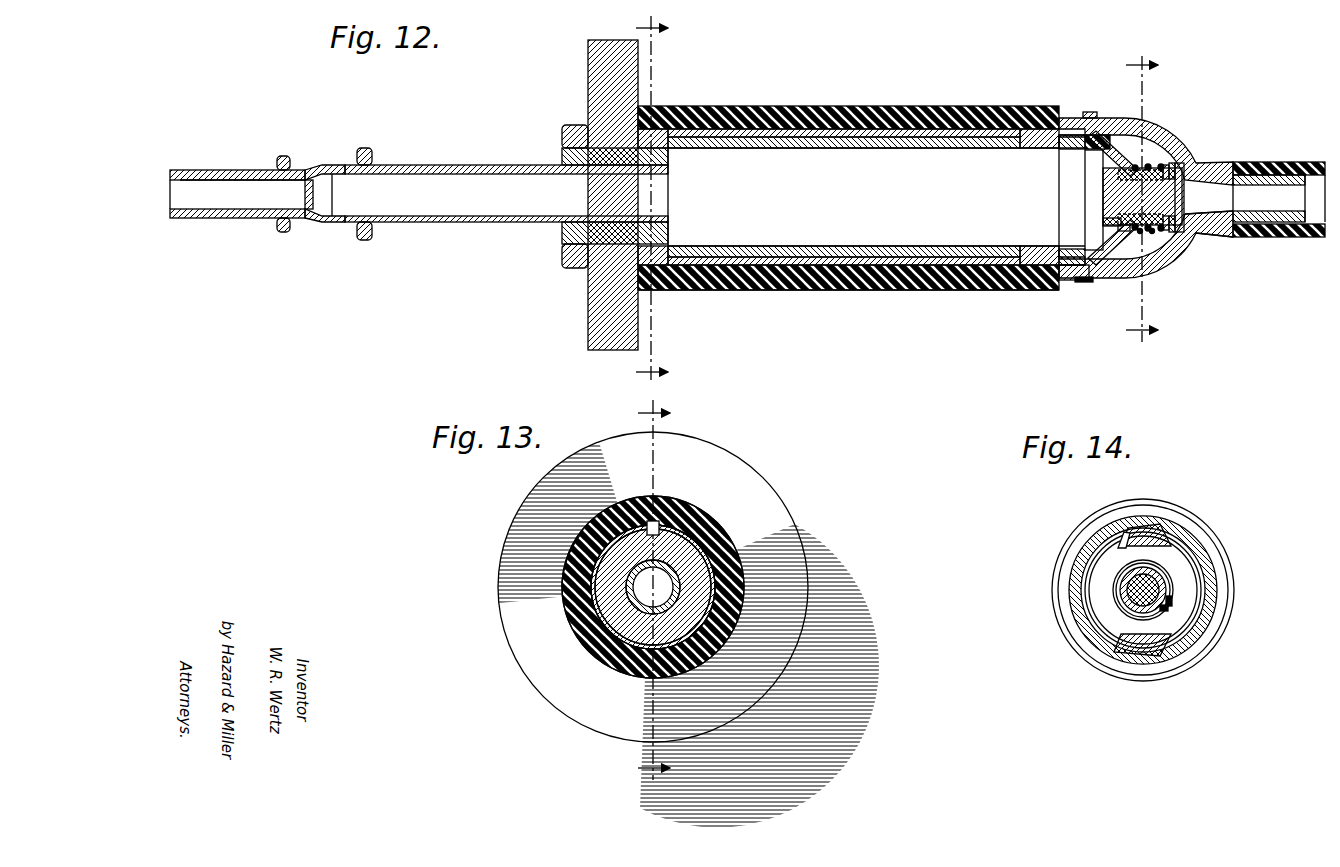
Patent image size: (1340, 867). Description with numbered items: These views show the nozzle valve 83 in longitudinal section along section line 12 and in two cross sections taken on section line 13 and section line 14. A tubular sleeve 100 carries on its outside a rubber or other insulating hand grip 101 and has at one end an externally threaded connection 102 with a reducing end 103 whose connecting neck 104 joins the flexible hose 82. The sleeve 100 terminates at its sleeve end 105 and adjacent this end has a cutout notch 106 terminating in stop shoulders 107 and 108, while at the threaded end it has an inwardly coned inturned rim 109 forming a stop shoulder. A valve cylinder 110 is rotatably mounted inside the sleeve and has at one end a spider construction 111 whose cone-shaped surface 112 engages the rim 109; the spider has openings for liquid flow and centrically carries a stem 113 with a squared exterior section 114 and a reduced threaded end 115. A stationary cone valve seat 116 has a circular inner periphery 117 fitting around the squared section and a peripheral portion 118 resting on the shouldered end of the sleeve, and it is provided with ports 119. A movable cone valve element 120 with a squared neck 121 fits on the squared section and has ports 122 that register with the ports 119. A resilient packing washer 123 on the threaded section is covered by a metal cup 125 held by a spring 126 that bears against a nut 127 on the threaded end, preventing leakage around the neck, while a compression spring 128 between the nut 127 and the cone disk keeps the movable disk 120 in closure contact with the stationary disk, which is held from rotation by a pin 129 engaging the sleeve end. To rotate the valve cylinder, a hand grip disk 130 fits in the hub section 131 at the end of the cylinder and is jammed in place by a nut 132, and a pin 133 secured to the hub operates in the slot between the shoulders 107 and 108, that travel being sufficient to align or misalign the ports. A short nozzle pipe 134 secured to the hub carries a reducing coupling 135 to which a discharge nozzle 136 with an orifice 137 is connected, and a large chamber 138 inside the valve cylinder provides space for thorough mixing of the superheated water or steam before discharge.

In FIG. 13, the section line 12- 12 is at (663, 595).
In FIG. 12, the section line 13- 13 is at (663, 194).
In FIG. 12, the section line 14- 14 is at (1150, 198).
In FIG. 12, the flexible hose 82 is at (1300, 162).
In FIG. 12, the nozzle valve 83 is at (834, 104).
In FIG. 12, the tubular sleeve 100 is at (1020, 265).
In FIG. 13, the tubular sleeve 100 is at (748, 577).
In FIG. 12, the insulating hand grip 101 is at (930, 290).
In FIG. 13, the insulating hand grip 101 is at (740, 550).
In FIG. 12, the externally threaded connection 102 is at (1070, 280).
In FIG. 12, the reducing end 103 is at (1205, 172).
In FIG. 14, the reducing end 103 is at (1190, 542).
In FIG. 12, the connecting neck 104 is at (1265, 162).
In FIG. 12, the sleeve end 105 is at (655, 290).
In FIG. 13, the cutout notch 106 is at (690, 540).
In FIG. 13, the stop shoulder 107 is at (712, 552).
In FIG. 13, the stop shoulder 108 is at (565, 568).
In FIG. 12, the inturned rim 109 is at (1085, 150).
In FIG. 12, the valve cylinder 110 is at (887, 148).
In FIG. 12, the spider construction 111 is at (1094, 195).
In FIG. 12, the cone-shaped surface 112 is at (1108, 222).
In FIG. 12, the stem 113 is at (1150, 167).
In FIG. 14, the stem 113 is at (1132, 592).
In FIG. 12, the squared exterior section 114 is at (1142, 233).
In FIG. 14, the squared exterior section 114 is at (1166, 608).
In FIG. 12, the reduced threaded end 115 is at (1183, 197).
In FIG. 12, the stationary cone valve seat 116 is at (1106, 140).
In FIG. 12, the circular inner periphery 117 is at (1124, 231).
In FIG. 12, the peripheral portion 118 is at (1084, 282).
In FIG. 12, the ports 119 is at (1112, 160).
In FIG. 14, the ports 119 is at (1138, 560).
In FIG. 12, the movable cone valve element 120 is at (1138, 172).
In FIG. 14, the movable cone valve element 120 is at (1180, 562).
In FIG. 12, the squared neck 121 is at (1155, 232).
In FIG. 14, the squared neck 121 is at (1160, 578).
In FIG. 12, the ports 122 is at (1112, 236).
In FIG. 14, the ports 122 is at (1125, 548).
In FIG. 12, the resilient packing washer 123 is at (1180, 238).
In FIG. 12, the metal cup 125 is at (1166, 166).
In FIG. 14, the metal cup 125 is at (1165, 590).
In FIG. 12, the spring 126 is at (1200, 236).
In FIG. 12, the nut 127 is at (1183, 170).
In FIG. 12, the compression spring 128 is at (1173, 167).
In FIG. 14, the compression spring 128 is at (1170, 598).
In FIG. 12, the pin 129 is at (1090, 118).
In FIG. 12, the hand grip disk 130 is at (612, 80).
In FIG. 13, the hand grip disk 130 is at (755, 670).
In FIG. 12, the hub section 131 is at (560, 258).
In FIG. 13, the hub section 131 is at (684, 602).
In FIG. 12, the nut 132 is at (566, 131).
In FIG. 12, the pin 133 is at (668, 122).
In FIG. 13, the pin 133 is at (657, 520).
In FIG. 12, the nozzle pipe 134 is at (440, 222).
In FIG. 13, the nozzle pipe 134 is at (745, 620).
In FIG. 12, the reducing coupling 135 is at (340, 162).
In FIG. 12, the discharge nozzle 136 is at (190, 219).
In FIG. 12, the orifice 137 is at (196, 168).
In FIG. 12, the chamber 138 is at (782, 194).